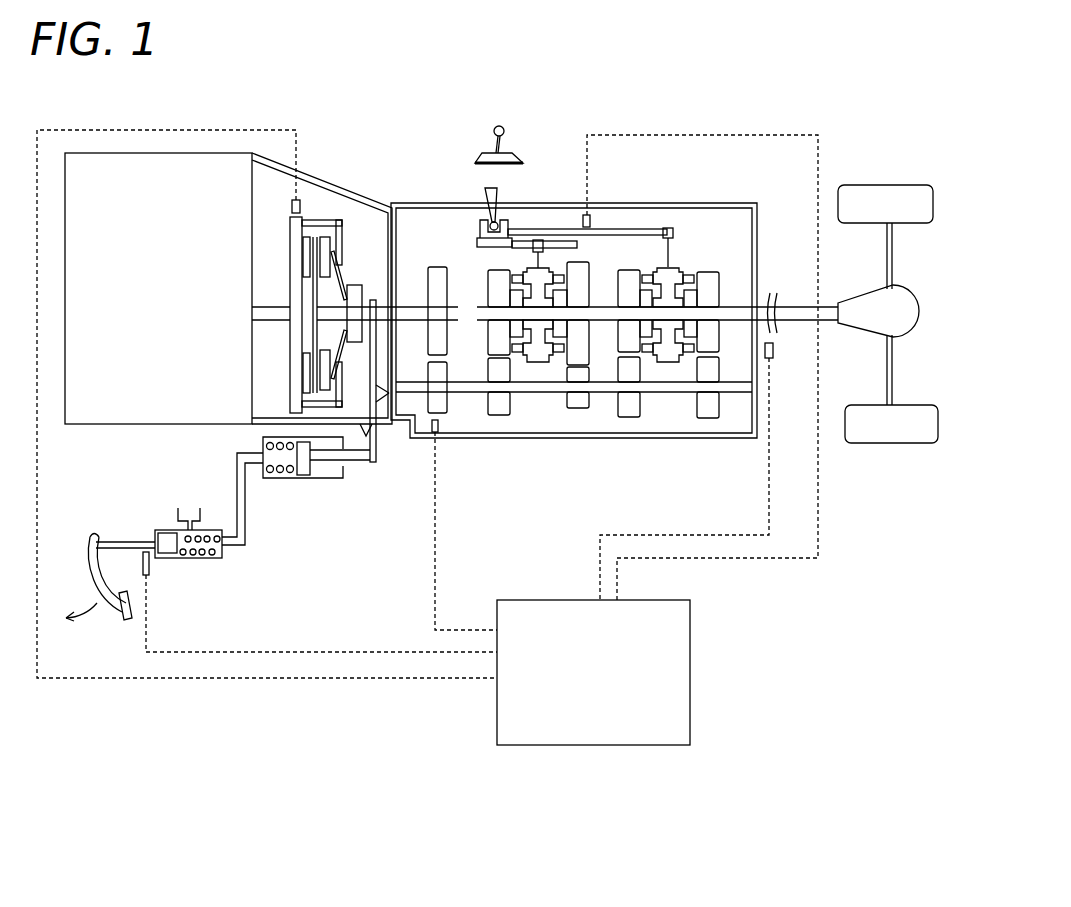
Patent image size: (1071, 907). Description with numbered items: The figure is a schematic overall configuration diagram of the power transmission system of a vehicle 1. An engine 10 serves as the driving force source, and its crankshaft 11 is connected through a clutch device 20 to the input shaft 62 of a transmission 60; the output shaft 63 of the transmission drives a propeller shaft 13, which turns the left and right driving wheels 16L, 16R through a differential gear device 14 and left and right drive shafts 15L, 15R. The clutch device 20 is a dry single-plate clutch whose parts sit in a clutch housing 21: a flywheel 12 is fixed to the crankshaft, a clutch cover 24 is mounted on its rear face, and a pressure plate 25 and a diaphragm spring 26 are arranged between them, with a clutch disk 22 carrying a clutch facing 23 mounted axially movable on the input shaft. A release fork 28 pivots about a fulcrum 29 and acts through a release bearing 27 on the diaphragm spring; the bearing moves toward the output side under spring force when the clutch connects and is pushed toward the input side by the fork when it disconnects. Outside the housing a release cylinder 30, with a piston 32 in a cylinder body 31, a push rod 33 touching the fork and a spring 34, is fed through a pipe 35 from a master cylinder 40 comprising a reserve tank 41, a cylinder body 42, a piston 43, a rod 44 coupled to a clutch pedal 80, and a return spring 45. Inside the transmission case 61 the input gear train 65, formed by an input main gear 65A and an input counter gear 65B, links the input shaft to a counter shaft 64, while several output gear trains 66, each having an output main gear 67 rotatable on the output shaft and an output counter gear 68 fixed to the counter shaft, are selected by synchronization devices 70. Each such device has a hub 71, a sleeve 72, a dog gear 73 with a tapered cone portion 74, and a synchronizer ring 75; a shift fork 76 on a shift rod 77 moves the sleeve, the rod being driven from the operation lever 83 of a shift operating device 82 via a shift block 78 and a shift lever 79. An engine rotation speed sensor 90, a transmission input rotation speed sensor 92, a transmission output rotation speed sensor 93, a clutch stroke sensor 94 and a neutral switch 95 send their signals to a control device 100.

The vehicle 1 is at (422, 107).
The engine 10 is at (148, 291).
The crankshaft 11 is at (268, 307).
The flywheel 12 is at (291, 240).
The propeller shaft 13 is at (804, 322).
The differential gear device 14 is at (862, 296).
The right drive shaft 15R is at (893, 258).
The left drive shaft 15L is at (893, 373).
The right driving wheel 16R is at (882, 185).
The left driving wheel 16L is at (886, 443).
The clutch device 20 is at (327, 170).
The clutch housing 21 is at (348, 184).
The clutch disk 22 is at (306, 350).
The clutch facing 23 is at (310, 257).
The clutch cover 24 is at (326, 220).
The pressure plate 25 is at (331, 245).
The diaphragm spring 26 is at (341, 355).
The release bearing 27 is at (359, 286).
The release fork 28 is at (368, 380).
The fulcrum 29 is at (379, 400).
The release cylinder 30 is at (314, 495).
The cylinder body 31 is at (272, 478).
The piston 32 is at (305, 478).
The push rod 33 is at (345, 470).
The spring 34 is at (288, 478).
The pipe 35 is at (233, 470).
The master cylinder 40 is at (186, 521).
The reserve tank 41 is at (178, 494).
The cylinder body 42 is at (170, 560).
The piston 43 is at (167, 533).
The rod 44 is at (135, 541).
The return spring 45 is at (200, 562).
The transmission 60 is at (431, 186).
The transmission case 61 is at (706, 202).
The input shaft 62 is at (405, 318).
The output shaft 63 is at (736, 322).
The counter shaft 64 is at (466, 394).
The input gear train 65 is at (420, 315).
The input main gear 65A is at (430, 298).
The input counter gear 65B is at (430, 370).
The output gear train 66 is at (494, 420).
The output main gear 67 is at (587, 275).
The output counter gear 68 is at (488, 375).
The synchronization device 70 is at (599, 362).
The hub 71 is at (531, 352).
The sleeve 72 is at (545, 270).
The dog gear 73 is at (490, 345).
The tapered cone portion 74 is at (490, 295).
The synchronizer ring 75 is at (521, 277).
The shift fork 76 is at (543, 240).
The shift rod 77 is at (635, 229).
The shift block 78 is at (478, 232).
The shift lever 79 is at (497, 193).
The clutch pedal 80 is at (88, 567).
The shift operating device 82 is at (514, 137).
The operation lever 83 is at (493, 136).
The engine rotation speed sensor 90 is at (291, 205).
The transmission input rotation speed sensor 92 is at (433, 435).
The transmission output rotation speed sensor 93 is at (774, 352).
The clutch stroke sensor 94 is at (142, 560).
The neutral switch 95 is at (590, 214).
The control device 100 is at (590, 745).